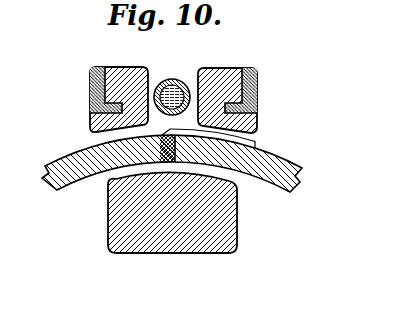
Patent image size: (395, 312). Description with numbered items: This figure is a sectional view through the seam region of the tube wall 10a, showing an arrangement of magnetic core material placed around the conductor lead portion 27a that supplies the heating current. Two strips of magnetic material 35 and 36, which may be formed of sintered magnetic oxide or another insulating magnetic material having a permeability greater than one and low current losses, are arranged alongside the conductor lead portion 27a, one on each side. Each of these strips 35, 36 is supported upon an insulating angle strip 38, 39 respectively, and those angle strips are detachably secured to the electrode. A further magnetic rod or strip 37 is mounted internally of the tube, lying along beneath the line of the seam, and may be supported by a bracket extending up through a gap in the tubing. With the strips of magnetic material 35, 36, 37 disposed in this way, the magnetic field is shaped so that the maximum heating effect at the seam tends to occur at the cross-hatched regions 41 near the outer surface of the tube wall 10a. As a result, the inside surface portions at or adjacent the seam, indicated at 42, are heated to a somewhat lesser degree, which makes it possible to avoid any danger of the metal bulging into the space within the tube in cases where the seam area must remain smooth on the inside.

The tube wall 10a is at (78, 148).
The conductor lead portion 27a is at (172, 79).
The strip of magnetic material 35 is at (99, 83).
The strip of magnetic material 36 is at (247, 84).
The magnetic rod or strip 37 is at (237, 220).
The insulating angle strip 38 is at (92, 100).
The insulating angle strip 39 is at (257, 100).
The cross-hatched regions of maximum heating 41 is at (250, 138).
The inside surface portions adjacent the seam 42 is at (106, 181).